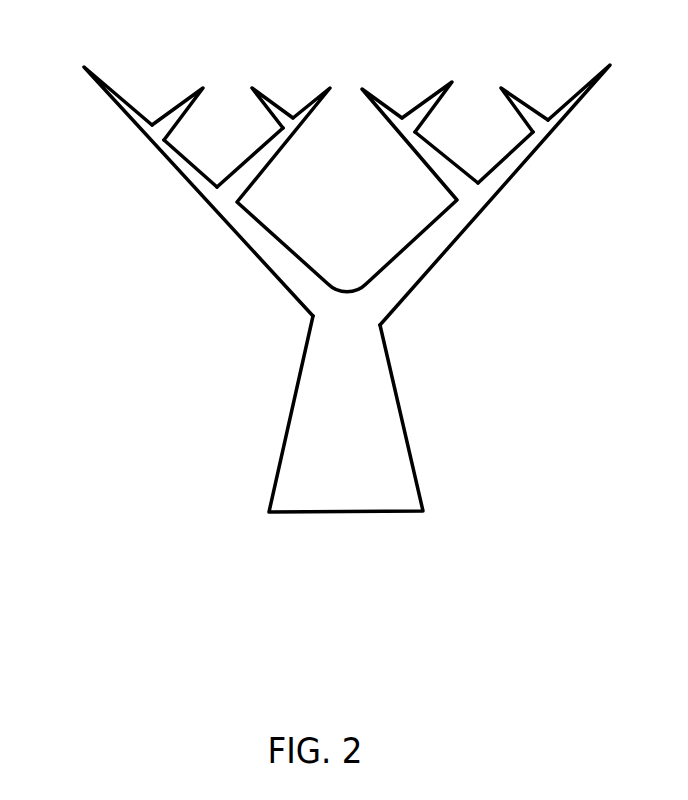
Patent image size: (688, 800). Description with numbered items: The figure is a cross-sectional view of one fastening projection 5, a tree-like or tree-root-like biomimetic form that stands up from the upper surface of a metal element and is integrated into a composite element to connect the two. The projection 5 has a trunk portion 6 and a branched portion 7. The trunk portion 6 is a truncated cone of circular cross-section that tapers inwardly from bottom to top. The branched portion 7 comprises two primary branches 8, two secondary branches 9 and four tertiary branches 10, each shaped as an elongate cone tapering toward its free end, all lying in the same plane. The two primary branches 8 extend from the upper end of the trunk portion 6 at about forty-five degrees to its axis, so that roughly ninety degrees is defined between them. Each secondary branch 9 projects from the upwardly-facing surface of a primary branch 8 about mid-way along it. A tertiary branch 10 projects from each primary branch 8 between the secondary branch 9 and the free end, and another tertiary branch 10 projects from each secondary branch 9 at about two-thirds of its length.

The fastening projection 5 is at (265, 593).
The trunk portion 6 is at (63, 323).
The branched portion 7 is at (63, 67).
The primary branch 8 is at (258, 258).
The secondary branch 9 is at (413, 153).
The tertiary branch 10 is at (203, 88).